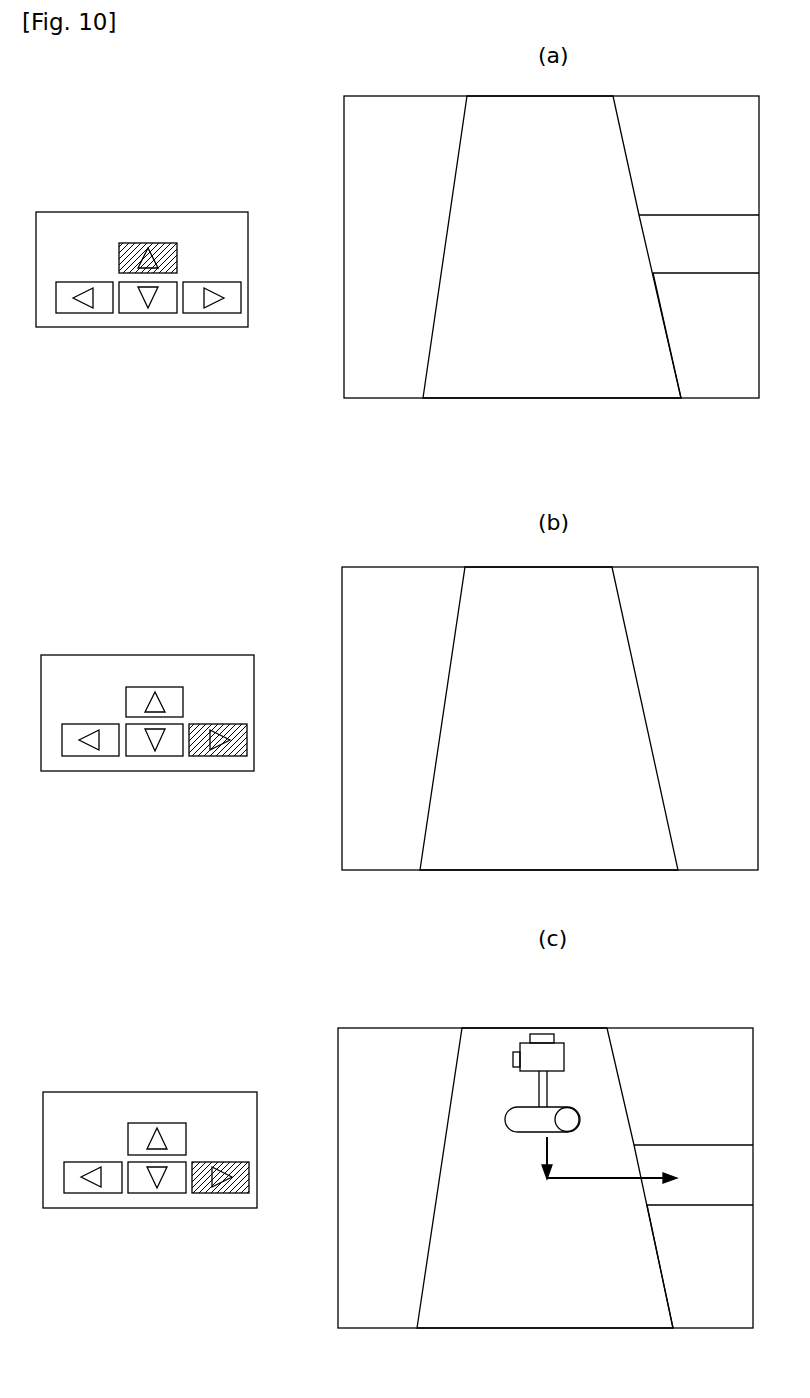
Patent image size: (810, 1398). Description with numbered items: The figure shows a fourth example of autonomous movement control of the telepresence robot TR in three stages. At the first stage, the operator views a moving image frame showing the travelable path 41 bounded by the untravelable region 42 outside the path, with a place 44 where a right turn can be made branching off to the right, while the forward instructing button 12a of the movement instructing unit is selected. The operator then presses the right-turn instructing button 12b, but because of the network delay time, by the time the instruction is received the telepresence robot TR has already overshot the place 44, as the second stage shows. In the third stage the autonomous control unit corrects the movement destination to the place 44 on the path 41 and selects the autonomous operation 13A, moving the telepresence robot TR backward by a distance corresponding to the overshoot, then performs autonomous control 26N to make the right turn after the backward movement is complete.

The forward instructing button 12a is at (163, 243).
The right-turn instructing button 12b is at (222, 725).
The travelable path 41 is at (556, 371).
The region outside the path 42 is at (391, 256).
The place where a right turn can be made 44 is at (723, 254).
The telepresence robot TR is at (558, 1029).
The autonomous operation 13A is at (547, 1151).
The autonomous control 26N is at (597, 1179).